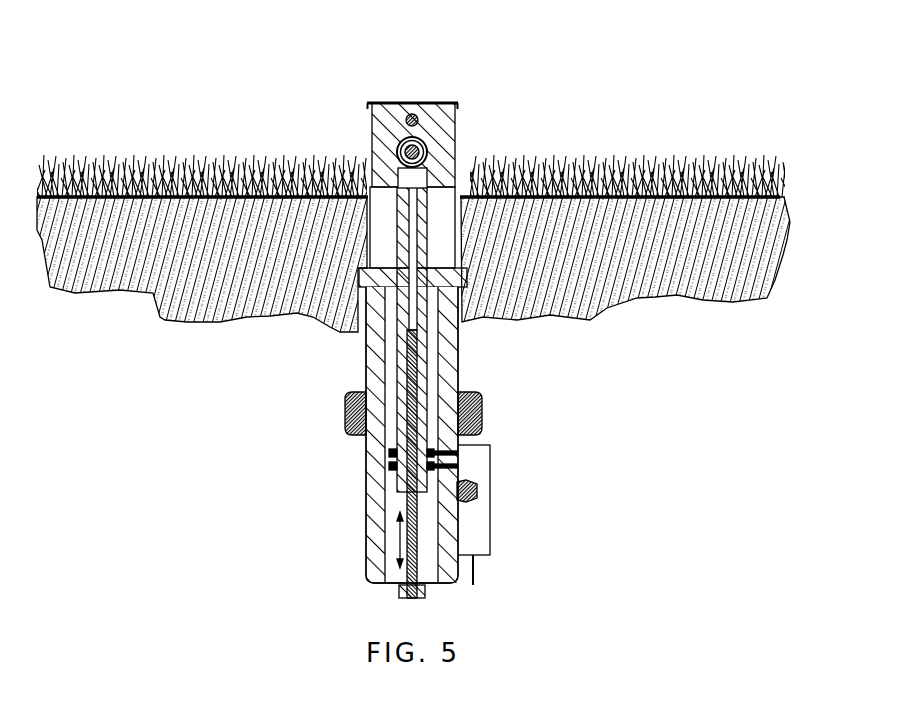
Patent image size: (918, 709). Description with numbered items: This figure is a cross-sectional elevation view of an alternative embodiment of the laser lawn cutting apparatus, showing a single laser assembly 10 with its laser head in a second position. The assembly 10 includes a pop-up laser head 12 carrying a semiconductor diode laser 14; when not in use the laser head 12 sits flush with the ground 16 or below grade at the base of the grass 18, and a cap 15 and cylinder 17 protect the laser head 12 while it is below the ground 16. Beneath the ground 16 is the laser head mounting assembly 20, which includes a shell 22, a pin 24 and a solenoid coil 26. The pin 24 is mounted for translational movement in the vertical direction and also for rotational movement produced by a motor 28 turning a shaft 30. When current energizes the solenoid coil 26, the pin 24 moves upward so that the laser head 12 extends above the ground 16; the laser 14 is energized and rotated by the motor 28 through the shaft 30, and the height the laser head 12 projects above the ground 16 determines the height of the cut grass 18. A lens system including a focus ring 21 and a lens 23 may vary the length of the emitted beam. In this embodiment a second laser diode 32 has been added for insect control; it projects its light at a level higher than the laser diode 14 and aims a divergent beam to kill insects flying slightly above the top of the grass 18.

The laser assembly 10 is at (366, 124).
The pop-up laser head 12 is at (433, 150).
The semiconductor diode laser 14 is at (428, 147).
The cap 15 is at (389, 103).
The ground 16 is at (332, 172).
The cylinder 17 is at (368, 190).
The grass 18 is at (413, 230).
The laser head mounting assembly 20 is at (330, 469).
The focus ring 21 is at (423, 140).
The shell 22 is at (371, 545).
The lens 23 is at (417, 134).
The pin 24 is at (392, 481).
The solenoid coil 26 is at (340, 404).
The motor 28 is at (436, 606).
The shaft 30 is at (399, 575).
The second laser diode 32 is at (410, 113).